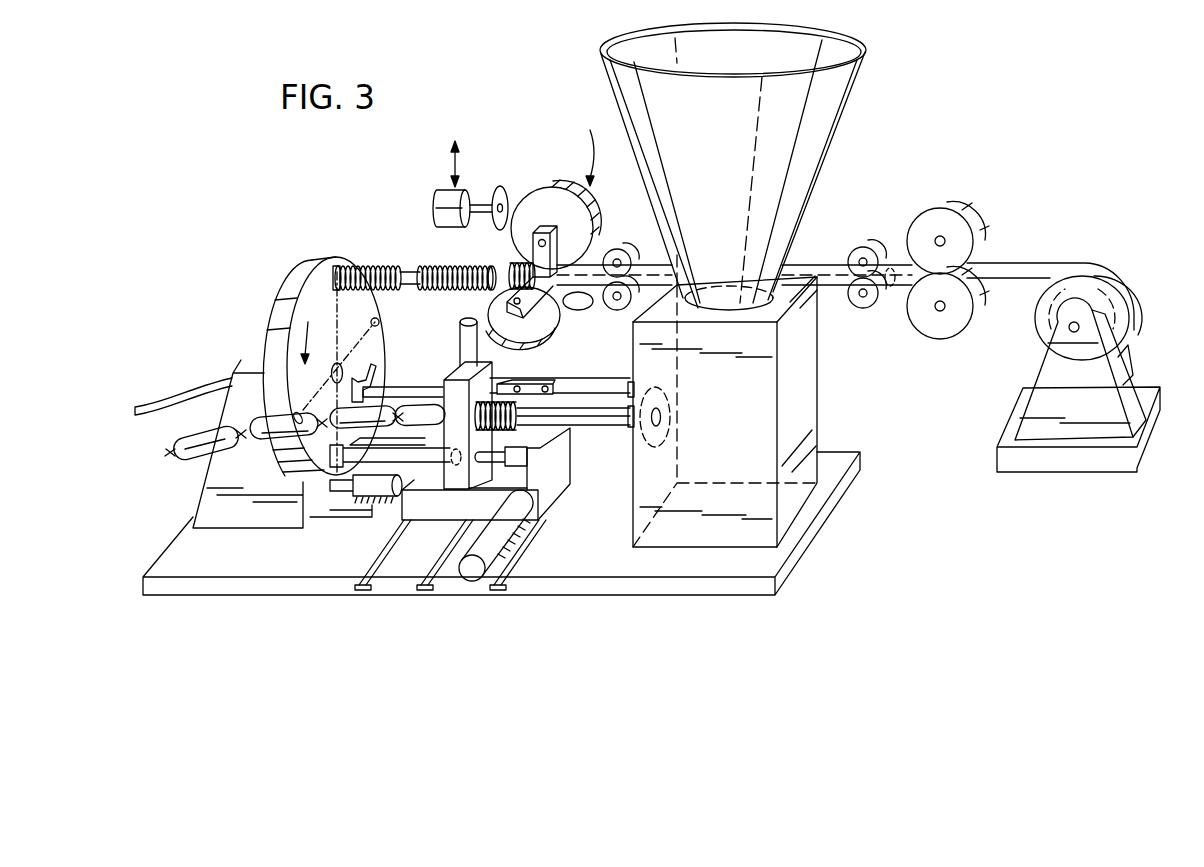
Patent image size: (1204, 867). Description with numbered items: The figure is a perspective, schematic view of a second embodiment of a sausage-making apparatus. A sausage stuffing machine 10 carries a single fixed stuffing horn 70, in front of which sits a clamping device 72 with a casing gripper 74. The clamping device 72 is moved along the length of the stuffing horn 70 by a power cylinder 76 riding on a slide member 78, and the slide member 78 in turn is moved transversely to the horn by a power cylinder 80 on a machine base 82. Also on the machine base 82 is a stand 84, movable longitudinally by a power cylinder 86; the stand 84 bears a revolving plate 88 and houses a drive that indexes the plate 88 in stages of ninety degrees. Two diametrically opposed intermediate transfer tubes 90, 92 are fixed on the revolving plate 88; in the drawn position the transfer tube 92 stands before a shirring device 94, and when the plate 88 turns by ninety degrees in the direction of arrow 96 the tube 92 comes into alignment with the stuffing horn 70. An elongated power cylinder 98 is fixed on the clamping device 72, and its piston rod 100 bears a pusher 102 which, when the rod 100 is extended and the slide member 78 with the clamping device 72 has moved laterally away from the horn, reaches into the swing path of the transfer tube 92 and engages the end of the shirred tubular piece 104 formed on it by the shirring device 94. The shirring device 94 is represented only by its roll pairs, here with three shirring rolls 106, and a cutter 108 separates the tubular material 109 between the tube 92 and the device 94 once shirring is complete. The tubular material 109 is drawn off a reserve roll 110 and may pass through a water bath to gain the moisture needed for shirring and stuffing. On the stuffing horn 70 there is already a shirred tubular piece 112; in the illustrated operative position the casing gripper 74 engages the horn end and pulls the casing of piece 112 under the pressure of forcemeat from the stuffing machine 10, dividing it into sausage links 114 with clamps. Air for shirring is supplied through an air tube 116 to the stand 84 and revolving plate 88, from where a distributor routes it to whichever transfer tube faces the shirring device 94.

The sausage stuffing machine 10 is at (803, 418).
The stuffing horn 70 is at (596, 420).
The clamping device 72 is at (485, 377).
The casing gripper 74 is at (476, 413).
The power cylinder 76 is at (518, 463).
The slide member 78 is at (441, 505).
The power cylinder 80 is at (480, 567).
The machine base 82 is at (307, 566).
The stand 84 is at (215, 503).
The power cylinder 86 is at (367, 492).
The revolving plate 88 is at (293, 304).
The intermediate transfer tube 90 is at (402, 464).
The intermediate transfer tube 92 is at (408, 276).
The shirring device 94 is at (734, 192).
The arrow 96 is at (297, 337).
The elongated power cylinder 98 is at (598, 365).
The piston rod 100 is at (411, 389).
The pusher 102 is at (377, 355).
The shirred tubular piece 104 is at (473, 265).
The shirring rolls 106 is at (553, 186).
The cutter 108 is at (497, 192).
The tubular material 109 is at (1027, 264).
The reserve roll 110 is at (1092, 292).
The shirred tubular piece 112 is at (517, 405).
The sausage links 114 is at (200, 447).
The air tube 116 is at (154, 407).